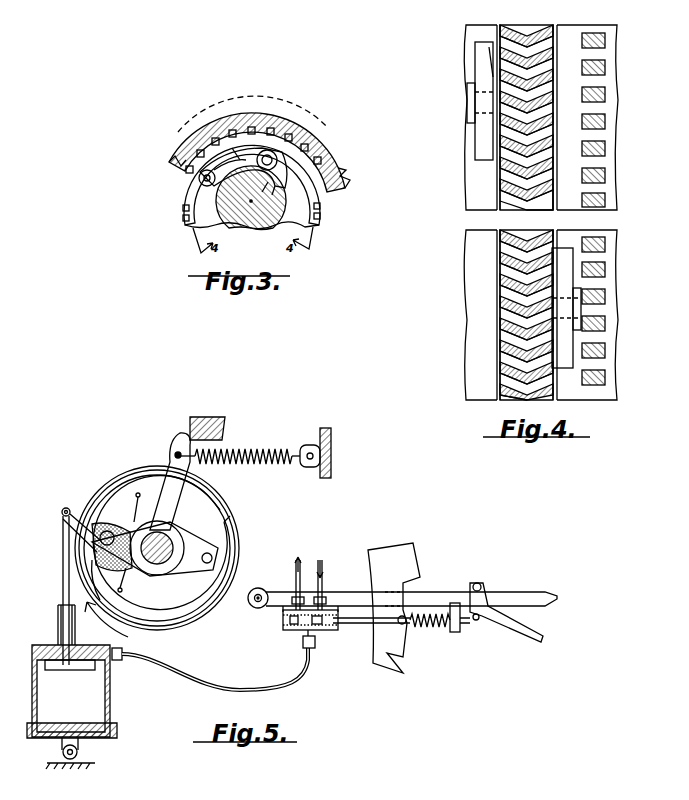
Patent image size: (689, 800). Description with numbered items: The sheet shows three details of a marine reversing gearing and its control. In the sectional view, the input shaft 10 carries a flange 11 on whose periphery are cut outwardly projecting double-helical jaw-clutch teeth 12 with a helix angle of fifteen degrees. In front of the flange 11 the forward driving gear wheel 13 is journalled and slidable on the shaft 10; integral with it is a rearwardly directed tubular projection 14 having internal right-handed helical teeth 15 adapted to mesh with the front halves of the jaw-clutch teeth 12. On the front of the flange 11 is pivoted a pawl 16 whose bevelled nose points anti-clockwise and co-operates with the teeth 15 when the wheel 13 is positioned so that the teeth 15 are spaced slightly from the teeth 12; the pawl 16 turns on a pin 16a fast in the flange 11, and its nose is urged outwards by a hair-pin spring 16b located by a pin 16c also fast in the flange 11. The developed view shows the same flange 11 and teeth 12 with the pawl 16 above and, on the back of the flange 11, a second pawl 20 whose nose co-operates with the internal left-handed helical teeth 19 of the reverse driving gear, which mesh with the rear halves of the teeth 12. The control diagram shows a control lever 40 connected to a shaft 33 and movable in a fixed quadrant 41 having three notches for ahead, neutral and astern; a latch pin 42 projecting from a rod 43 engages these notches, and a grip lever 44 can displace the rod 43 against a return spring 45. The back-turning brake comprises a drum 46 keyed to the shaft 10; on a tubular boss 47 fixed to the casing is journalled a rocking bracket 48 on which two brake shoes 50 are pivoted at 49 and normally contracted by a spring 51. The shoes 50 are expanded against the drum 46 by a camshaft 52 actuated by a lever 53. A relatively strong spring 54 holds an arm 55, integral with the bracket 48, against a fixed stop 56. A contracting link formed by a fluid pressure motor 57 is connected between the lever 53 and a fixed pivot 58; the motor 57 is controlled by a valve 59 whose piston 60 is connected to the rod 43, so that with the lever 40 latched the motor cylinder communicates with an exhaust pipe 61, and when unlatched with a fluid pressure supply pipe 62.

In FIG. 3, the input shaft 10 is at (260, 218).
In FIG. 4, the input shaft 10 is at (468, 192).
In FIG. 3, the flange 11 is at (200, 220).
In FIG. 4, the flange 11 is at (553, 137).
In FIG. 3, the jaw-clutch teeth 12 is at (182, 212).
In FIG. 4, the jaw-clutch teeth 12 is at (533, 157).
In FIG. 3, the forward driving gear wheel 13 is at (188, 163).
In FIG. 3, the tubular projection 14 is at (362, 170).
In FIG. 3, the helical teeth 15 is at (223, 152).
In FIG. 4, the helical teeth 15 is at (503, 175).
In FIG. 3, the pawl 16 is at (310, 152).
In FIG. 4, the pawl 16 is at (482, 67).
In FIG. 3, the pin 16a is at (278, 152).
In FIG. 4, the pin 16a is at (470, 102).
In FIG. 3, the hair-pin spring 16b is at (232, 148).
In FIG. 3, the pin 16c is at (198, 180).
In FIG. 4, the helical teeth 19 is at (603, 87).
In FIG. 4, the pawl 20 is at (567, 263).
In FIG. 5, the shaft 33 is at (254, 608).
In FIG. 5, the control lever 40 is at (443, 592).
In FIG. 5, the quadrant 41 is at (415, 563).
In FIG. 5, the latch pin 42 is at (412, 627).
In FIG. 5, the rod 43 is at (460, 632).
In FIG. 5, the grip lever 44 is at (503, 628).
In FIG. 5, the return spring 45 is at (440, 627).
In FIG. 5, the drum 46 is at (233, 512).
In FIG. 5, the tubular boss 47 is at (170, 528).
In FIG. 5, the rocking bracket 48 is at (155, 570).
In FIG. 5, the pivot 49 is at (212, 558).
In FIG. 5, the brake shoes 50 is at (145, 472).
In FIG. 5, the spring 51 is at (130, 525).
In FIG. 5, the camshaft 52 is at (97, 543).
In FIG. 5, the lever 53 is at (68, 507).
In FIG. 5, the spring 54 is at (260, 446).
In FIG. 5, the arm 55 is at (176, 442).
In FIG. 5, the fixed stop 56 is at (188, 425).
In FIG. 5, the fluid pressure motor 57 is at (110, 695).
In FIG. 5, the fixed pivot 58 is at (90, 762).
In FIG. 5, the valve 59 is at (333, 636).
In FIG. 5, the piston 60 is at (283, 620).
In FIG. 5, the exhaust pipe 61 is at (296, 590).
In FIG. 5, the fluid pressure supply pipe 62 is at (323, 590).